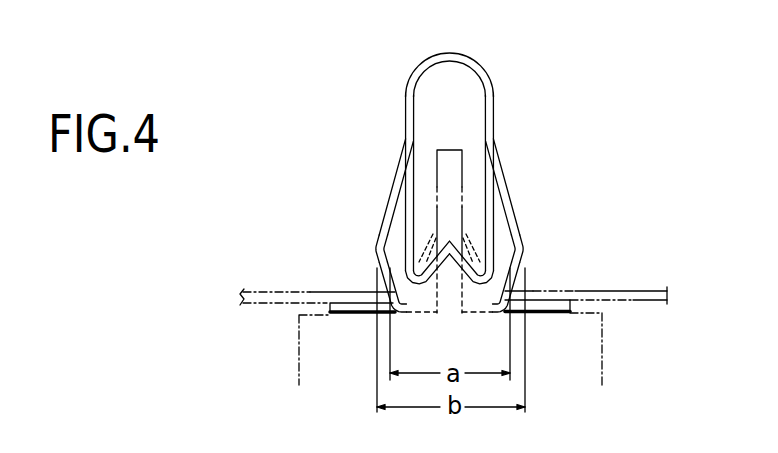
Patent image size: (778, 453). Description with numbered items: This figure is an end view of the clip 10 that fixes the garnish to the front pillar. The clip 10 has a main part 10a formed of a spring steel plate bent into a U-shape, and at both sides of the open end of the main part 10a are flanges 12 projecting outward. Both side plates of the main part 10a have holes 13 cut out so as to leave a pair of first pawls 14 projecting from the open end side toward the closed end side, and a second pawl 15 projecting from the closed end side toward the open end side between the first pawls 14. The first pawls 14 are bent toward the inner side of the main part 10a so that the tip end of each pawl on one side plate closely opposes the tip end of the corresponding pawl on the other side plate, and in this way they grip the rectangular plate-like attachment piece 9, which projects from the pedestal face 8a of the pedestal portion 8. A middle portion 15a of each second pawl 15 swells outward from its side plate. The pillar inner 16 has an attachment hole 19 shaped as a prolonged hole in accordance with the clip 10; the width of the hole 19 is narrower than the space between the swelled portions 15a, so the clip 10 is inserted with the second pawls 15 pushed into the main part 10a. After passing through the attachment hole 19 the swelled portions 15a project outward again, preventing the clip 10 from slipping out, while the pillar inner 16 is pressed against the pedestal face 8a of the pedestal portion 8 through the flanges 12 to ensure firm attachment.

The pedestal portion 8 is at (466, 287).
The pedestal face 8a is at (597, 313).
The attachment piece 9 is at (403, 165).
The clip 10 is at (437, 185).
The main part 10a is at (408, 115).
The flanges 12 is at (345, 306).
The holes 13 is at (491, 218).
The first pawls 14 is at (476, 282).
The second pawl 15 is at (388, 198).
The middle portion 15a is at (376, 239).
The pillar inner 16 is at (657, 288).
The attachment hole 19 is at (518, 292).